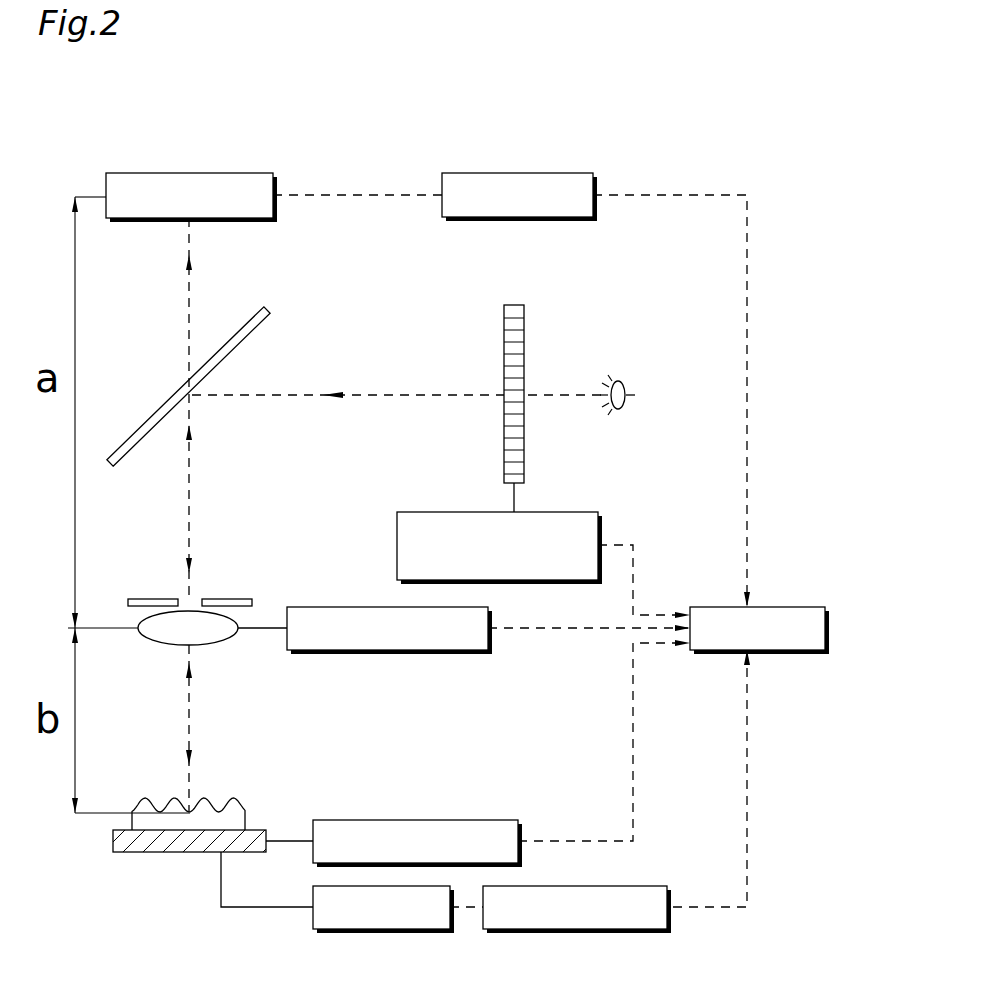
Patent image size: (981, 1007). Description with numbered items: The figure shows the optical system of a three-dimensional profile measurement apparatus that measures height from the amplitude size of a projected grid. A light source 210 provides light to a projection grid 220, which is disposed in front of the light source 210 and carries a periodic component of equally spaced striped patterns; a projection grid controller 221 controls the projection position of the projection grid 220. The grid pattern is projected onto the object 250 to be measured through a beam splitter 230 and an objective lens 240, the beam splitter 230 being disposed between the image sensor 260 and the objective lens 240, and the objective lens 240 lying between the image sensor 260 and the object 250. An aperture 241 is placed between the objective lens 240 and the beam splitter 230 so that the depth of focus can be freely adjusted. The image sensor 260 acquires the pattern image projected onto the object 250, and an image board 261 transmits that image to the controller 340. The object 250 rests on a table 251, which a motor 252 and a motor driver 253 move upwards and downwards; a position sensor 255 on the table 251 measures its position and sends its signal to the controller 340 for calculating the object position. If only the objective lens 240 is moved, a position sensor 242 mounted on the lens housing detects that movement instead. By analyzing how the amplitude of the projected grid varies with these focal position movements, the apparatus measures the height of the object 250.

The light source 210 is at (619, 381).
The projection grid 220 is at (513, 305).
The projection grid controller 221 is at (578, 492).
The beam splitter 230 is at (298, 290).
The objective lens 240 is at (218, 643).
The aperture 241 is at (238, 599).
The position sensor 242 is at (340, 607).
The object 250 is at (236, 802).
The table 251 is at (175, 852).
The motor 252 is at (388, 933).
The motor driver 253 is at (583, 933).
The position sensor 255 is at (384, 820).
The image sensor 260 is at (190, 173).
The image board 261 is at (506, 173).
The controller 340 is at (806, 584).